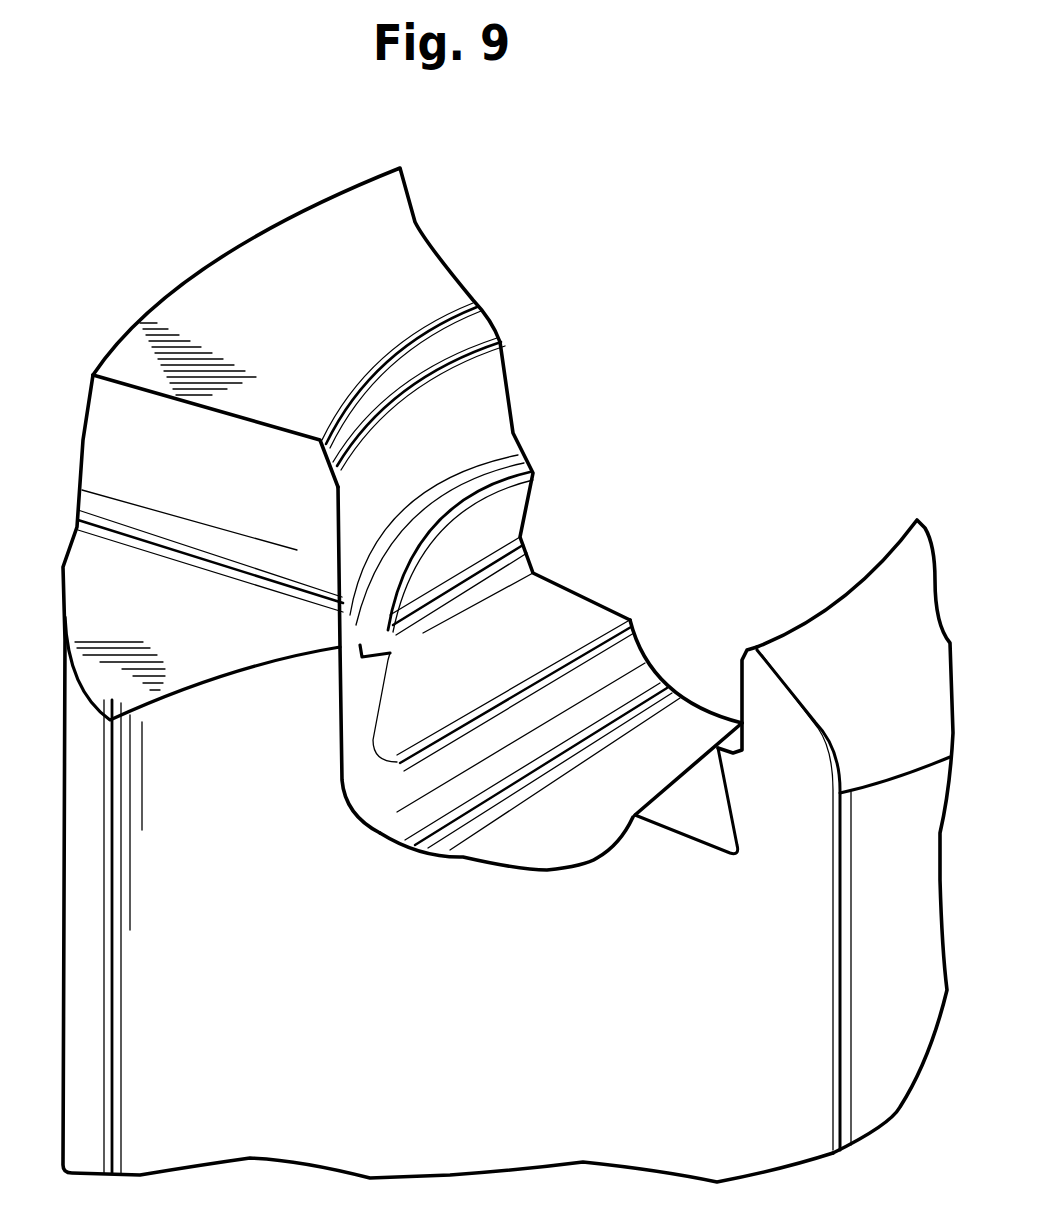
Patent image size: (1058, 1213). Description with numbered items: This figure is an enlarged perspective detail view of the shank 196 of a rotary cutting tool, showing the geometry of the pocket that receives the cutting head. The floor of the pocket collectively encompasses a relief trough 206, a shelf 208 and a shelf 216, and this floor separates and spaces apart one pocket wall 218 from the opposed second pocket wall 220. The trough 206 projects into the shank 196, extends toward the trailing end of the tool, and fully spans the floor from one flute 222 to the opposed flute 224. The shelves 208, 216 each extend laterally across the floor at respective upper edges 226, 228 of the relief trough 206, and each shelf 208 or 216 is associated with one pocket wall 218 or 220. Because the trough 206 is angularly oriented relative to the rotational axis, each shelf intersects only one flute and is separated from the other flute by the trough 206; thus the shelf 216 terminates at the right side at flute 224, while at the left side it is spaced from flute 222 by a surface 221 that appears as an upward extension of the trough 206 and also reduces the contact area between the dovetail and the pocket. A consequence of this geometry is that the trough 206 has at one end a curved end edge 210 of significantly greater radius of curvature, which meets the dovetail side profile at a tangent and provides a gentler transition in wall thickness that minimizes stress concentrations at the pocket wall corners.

The shank 196 is at (735, 345).
The pocket wall 218 is at (517, 400).
The shelf 216 is at (502, 676).
The upper edge 226 is at (636, 633).
The upper edge 228 is at (693, 755).
The flute 224 is at (690, 533).
The relief trough 206 is at (567, 841).
The shelf 208 is at (713, 824).
The curved end edge 210 is at (350, 787).
The surface 221 is at (352, 707).
The flute 222 is at (381, 1082).
The second pocket wall 220 is at (828, 603).